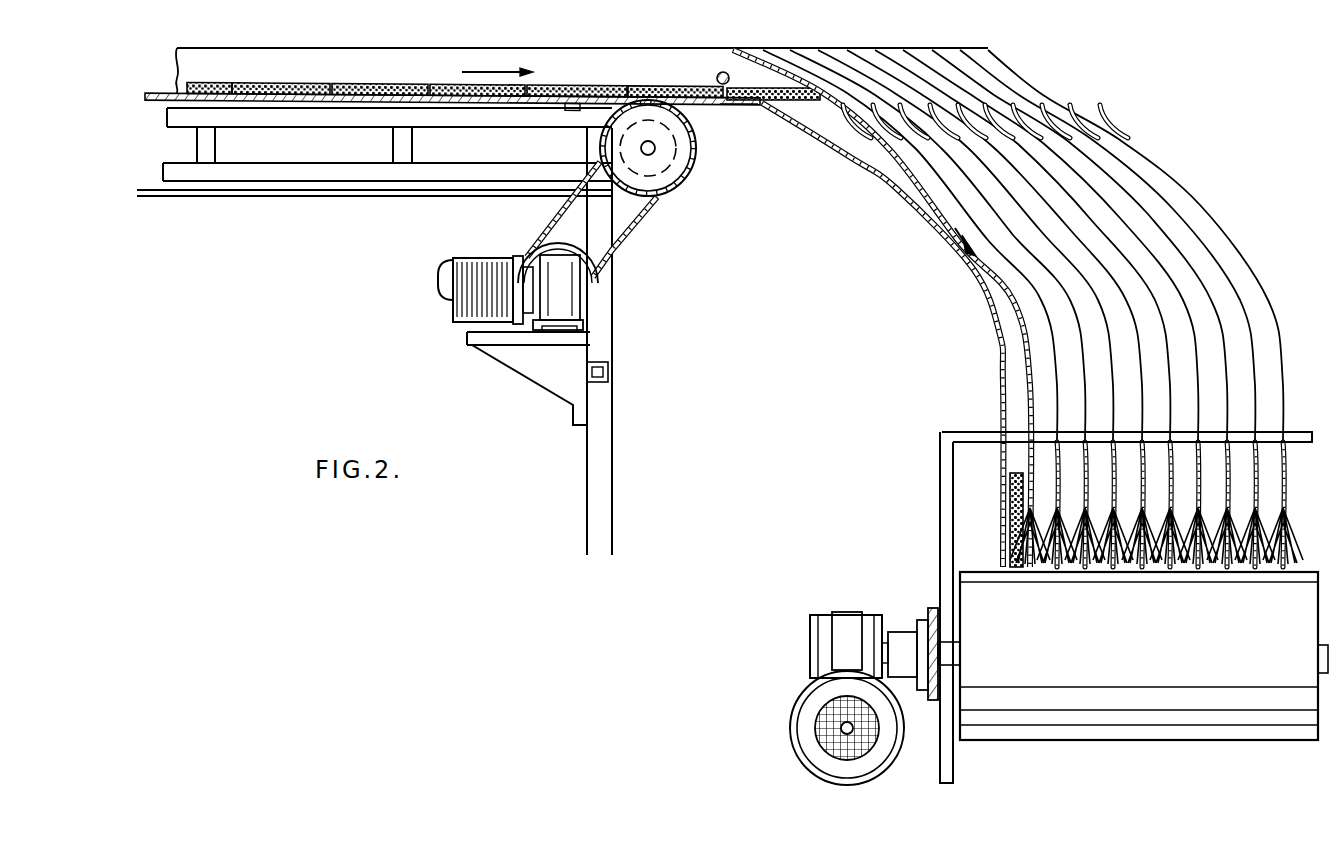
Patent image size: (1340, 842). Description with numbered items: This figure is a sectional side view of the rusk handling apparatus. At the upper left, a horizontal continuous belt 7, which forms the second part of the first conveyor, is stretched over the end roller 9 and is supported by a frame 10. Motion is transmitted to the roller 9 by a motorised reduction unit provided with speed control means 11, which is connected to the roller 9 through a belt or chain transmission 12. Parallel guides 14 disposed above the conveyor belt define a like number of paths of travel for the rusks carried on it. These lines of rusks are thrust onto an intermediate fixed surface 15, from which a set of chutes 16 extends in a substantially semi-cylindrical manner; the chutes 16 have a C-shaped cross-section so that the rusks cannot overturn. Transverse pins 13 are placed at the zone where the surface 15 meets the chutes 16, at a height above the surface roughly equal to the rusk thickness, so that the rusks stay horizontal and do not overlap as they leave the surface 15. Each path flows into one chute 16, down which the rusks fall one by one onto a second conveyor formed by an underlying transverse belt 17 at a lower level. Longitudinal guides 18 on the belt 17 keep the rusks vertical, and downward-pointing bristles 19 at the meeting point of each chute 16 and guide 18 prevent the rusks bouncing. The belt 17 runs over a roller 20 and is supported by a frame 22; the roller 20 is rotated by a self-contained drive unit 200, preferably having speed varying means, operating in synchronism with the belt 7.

The horizontal continuous belt 7 is at (160, 92).
The end roller 9 is at (693, 173).
The frame 10 is at (326, 176).
The motorised reduction unit with speed control means 11 is at (553, 283).
The belt or chain transmission 12 is at (625, 233).
The transverse pins 13 is at (723, 72).
The parallel guides 14 is at (578, 55).
The intermediate fixed surface 15 is at (723, 104).
The chutes 16 is at (880, 182).
The transverse belt 17 is at (1097, 607).
The longitudinal guides 18 is at (1227, 503).
The bristles 19 is at (1280, 542).
The roller 20 is at (975, 617).
The frame 22 is at (953, 752).
The self-contained drive unit 200 is at (823, 657).